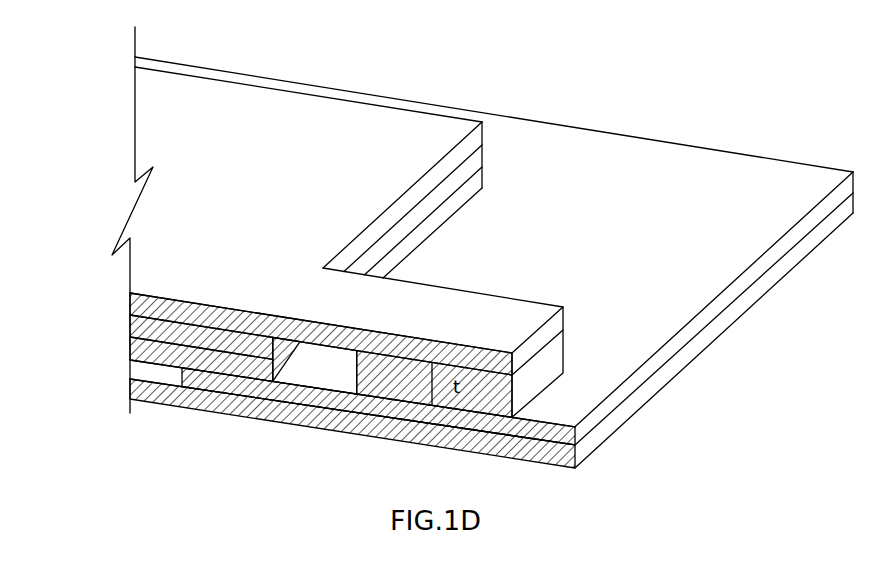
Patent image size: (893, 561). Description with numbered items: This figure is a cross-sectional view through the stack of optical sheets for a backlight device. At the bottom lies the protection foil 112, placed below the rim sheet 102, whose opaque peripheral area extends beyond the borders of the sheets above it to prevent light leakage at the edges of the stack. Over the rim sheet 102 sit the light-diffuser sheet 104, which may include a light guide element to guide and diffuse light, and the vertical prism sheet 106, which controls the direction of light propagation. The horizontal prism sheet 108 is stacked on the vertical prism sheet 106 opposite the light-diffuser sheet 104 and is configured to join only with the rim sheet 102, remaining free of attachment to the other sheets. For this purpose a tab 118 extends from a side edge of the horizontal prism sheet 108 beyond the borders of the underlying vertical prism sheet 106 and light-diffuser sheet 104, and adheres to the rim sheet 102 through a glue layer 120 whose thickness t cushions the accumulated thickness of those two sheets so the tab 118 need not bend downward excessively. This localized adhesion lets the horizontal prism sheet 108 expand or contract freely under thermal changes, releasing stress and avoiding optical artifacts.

The rim sheet 102 is at (565, 437).
The light-diffuser sheet 104 is at (143, 350).
The vertical prism sheet 106 is at (143, 327).
The horizontal prism sheet 108 is at (143, 302).
The protection foil 112 is at (565, 462).
The tab 118 is at (480, 313).
The glue layer 120 is at (552, 363).